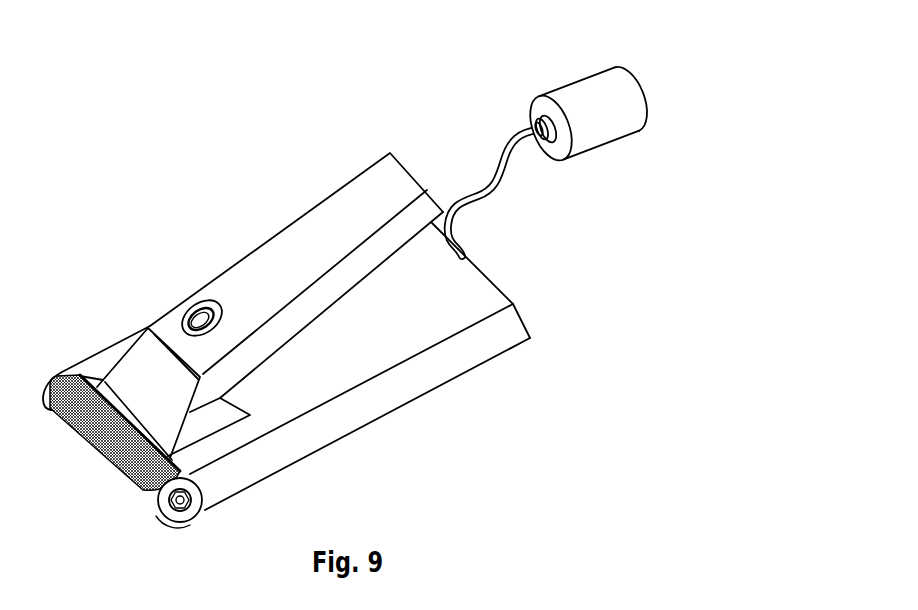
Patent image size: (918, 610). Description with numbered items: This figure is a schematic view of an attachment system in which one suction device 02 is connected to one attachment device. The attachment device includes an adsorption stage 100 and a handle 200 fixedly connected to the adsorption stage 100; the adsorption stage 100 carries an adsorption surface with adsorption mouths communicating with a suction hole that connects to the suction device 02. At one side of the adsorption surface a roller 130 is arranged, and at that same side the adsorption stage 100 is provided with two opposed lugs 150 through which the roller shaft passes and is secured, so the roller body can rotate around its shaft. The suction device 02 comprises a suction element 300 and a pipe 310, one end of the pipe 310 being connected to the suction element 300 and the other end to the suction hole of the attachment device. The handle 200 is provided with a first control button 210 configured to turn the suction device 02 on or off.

The suction device 02 is at (566, 53).
The adsorption stage 100 is at (488, 350).
The roller 130 is at (93, 441).
The lug 150 is at (204, 500).
The handle 200 is at (332, 212).
The first control button 210 is at (192, 314).
The suction element 300 is at (592, 103).
The pipe 310 is at (513, 147).